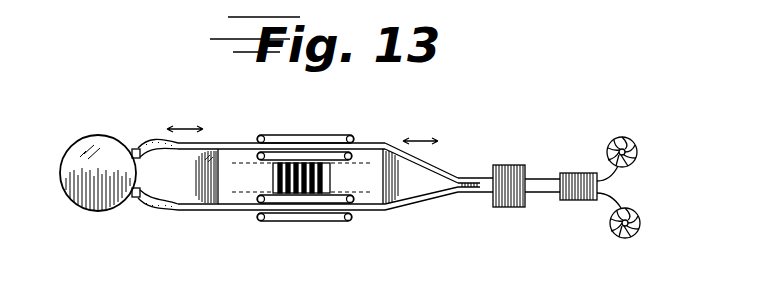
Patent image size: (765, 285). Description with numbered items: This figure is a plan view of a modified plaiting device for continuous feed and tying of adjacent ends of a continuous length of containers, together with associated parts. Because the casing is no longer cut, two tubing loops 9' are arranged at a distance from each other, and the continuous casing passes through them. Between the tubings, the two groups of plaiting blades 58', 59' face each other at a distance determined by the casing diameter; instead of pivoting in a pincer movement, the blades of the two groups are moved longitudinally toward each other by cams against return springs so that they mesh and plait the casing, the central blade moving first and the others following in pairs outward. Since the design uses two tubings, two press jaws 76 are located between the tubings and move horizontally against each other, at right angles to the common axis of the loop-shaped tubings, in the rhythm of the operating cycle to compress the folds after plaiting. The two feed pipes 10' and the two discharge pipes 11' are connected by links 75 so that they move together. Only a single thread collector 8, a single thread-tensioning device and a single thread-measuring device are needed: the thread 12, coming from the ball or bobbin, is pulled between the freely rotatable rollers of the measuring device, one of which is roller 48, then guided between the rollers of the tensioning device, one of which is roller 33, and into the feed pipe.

The thread collector 8 is at (80, 197).
The discharge pipes 11' is at (182, 191).
The feed pipes 10' is at (335, 189).
The links 75 is at (203, 163).
The tubing loops 9' is at (305, 176).
The group of plaiting blades 58' is at (316, 214).
The group of plaiting blades 59' is at (333, 214).
The press jaws 76 is at (333, 182).
The roller of thread-tensioning device 33 is at (503, 203).
The thread 12 is at (537, 185).
The roller of thread-measuring device 48 is at (580, 202).